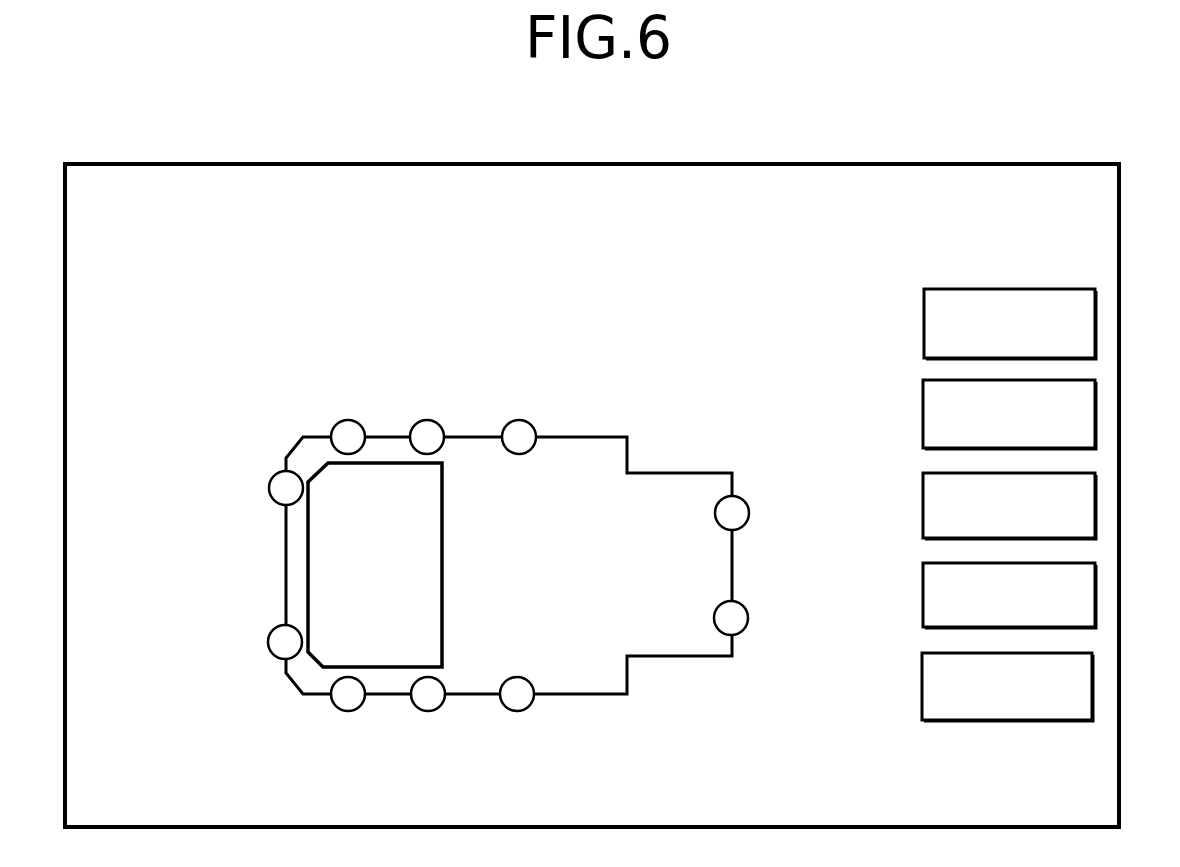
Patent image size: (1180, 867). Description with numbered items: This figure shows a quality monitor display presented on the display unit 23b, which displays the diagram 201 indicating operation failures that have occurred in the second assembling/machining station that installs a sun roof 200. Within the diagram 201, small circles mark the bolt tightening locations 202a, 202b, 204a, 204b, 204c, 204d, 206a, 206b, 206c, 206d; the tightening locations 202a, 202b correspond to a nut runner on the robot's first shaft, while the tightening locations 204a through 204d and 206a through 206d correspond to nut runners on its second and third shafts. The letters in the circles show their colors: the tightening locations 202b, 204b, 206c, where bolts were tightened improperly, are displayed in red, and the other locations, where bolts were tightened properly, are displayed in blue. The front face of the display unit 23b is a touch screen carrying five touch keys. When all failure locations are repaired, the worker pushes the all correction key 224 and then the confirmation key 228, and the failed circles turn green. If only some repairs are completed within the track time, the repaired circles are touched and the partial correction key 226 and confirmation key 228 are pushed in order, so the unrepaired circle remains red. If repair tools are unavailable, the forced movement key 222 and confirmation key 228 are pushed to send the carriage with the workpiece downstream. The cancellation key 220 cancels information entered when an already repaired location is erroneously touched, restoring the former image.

The display unit 23b is at (863, 163).
The sun roof 200 is at (627, 437).
The diagram 201 is at (547, 372).
The bolt tightening location 202a is at (746, 505).
The bolt tightening location 202b is at (746, 611).
The bolt tightening location 204a is at (428, 420).
The bolt tightening location 204b is at (521, 454).
The bolt tightening location 204c is at (423, 711).
The bolt tightening location 204d is at (525, 678).
The bolt tightening location 206a is at (348, 420).
The bolt tightening location 206b is at (269, 488).
The bolt tightening location 206c is at (268, 641).
The bolt tightening location 206d is at (340, 710).
The cancellation key 220 is at (1020, 289).
The forced movement key 222 is at (1092, 380).
The all correction key 224 is at (1092, 473).
The partial correction key 226 is at (1092, 563).
The confirmation key 228 is at (1092, 653).